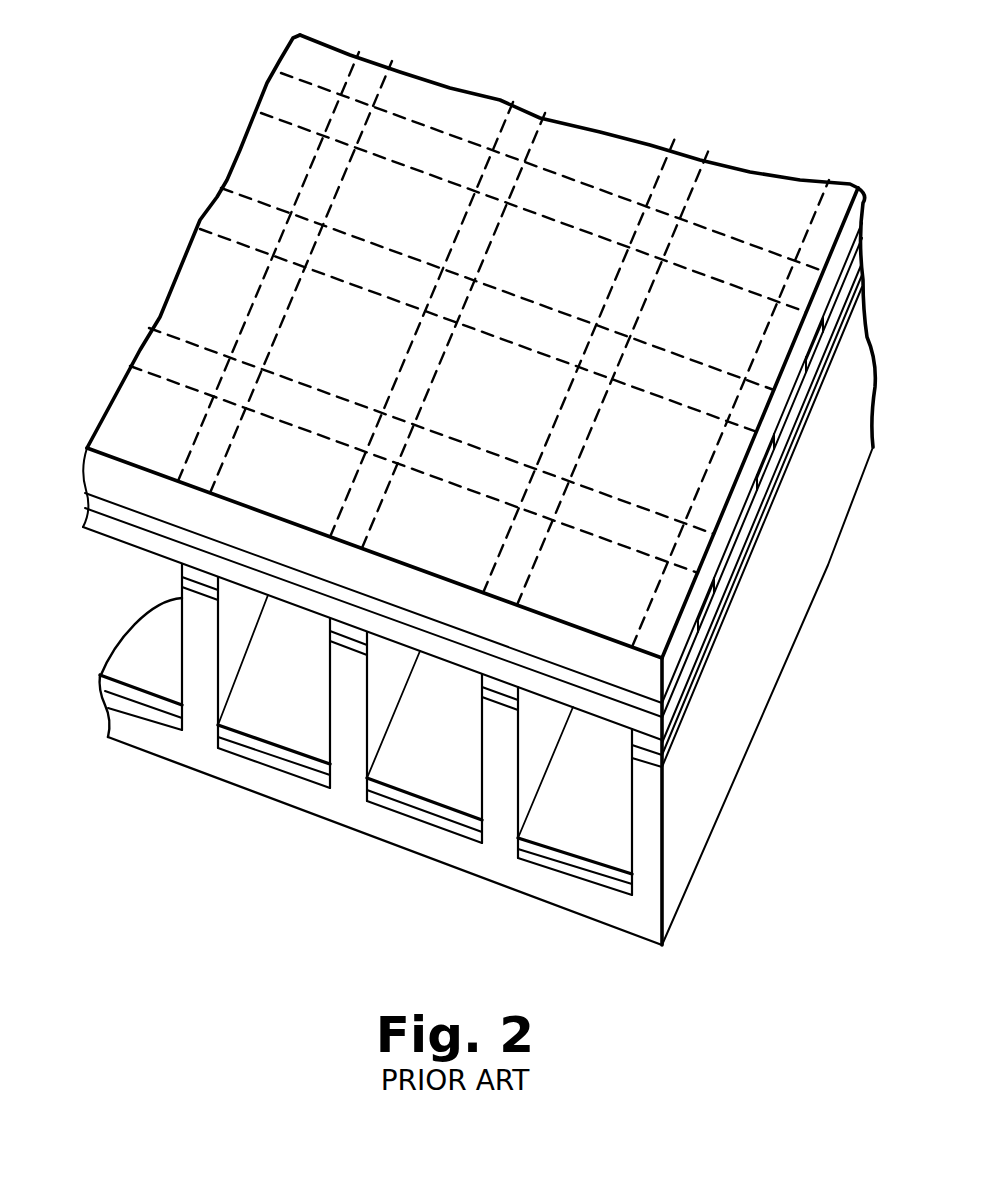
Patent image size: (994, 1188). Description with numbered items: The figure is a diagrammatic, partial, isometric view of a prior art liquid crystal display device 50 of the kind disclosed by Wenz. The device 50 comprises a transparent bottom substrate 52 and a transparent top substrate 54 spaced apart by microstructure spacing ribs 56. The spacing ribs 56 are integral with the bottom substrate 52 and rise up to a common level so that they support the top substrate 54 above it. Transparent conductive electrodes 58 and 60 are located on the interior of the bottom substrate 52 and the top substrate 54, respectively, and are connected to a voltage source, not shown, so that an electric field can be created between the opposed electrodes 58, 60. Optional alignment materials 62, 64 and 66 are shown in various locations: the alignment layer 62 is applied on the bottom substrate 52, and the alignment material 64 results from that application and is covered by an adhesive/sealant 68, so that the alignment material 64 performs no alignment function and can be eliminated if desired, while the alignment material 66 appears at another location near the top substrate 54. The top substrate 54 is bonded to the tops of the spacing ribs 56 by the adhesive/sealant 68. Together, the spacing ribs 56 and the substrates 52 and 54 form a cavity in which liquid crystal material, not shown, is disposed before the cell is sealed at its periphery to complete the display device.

The liquid crystal display device 50 is at (120, 246).
The bottom substrate 52 is at (132, 730).
The top substrate 54 is at (103, 475).
The spacing ribs 56 is at (347, 687).
The transparent conductive electrode 58 is at (290, 770).
The transparent conductive electrode 60 is at (740, 535).
The alignment layer 62 is at (240, 740).
The alignment material 64 is at (373, 633).
The alignment material 66 is at (715, 600).
The adhesive/sealant 68 is at (523, 702).